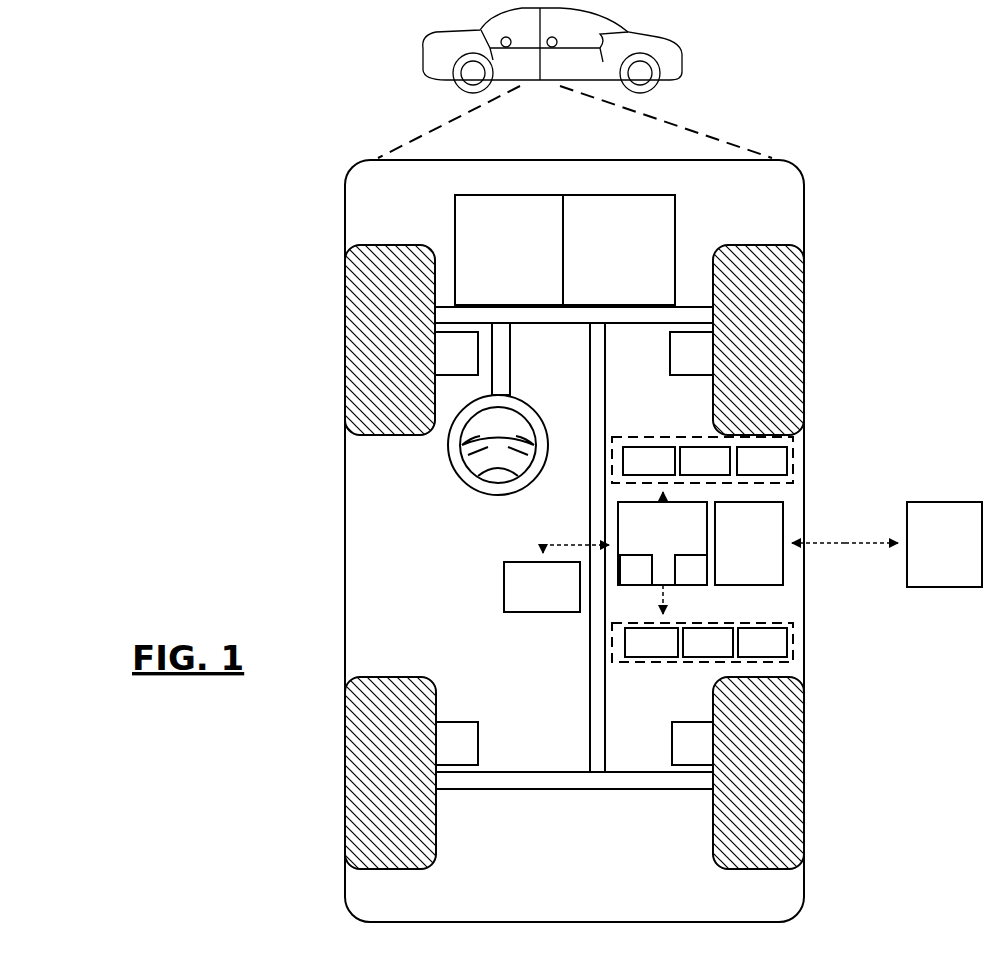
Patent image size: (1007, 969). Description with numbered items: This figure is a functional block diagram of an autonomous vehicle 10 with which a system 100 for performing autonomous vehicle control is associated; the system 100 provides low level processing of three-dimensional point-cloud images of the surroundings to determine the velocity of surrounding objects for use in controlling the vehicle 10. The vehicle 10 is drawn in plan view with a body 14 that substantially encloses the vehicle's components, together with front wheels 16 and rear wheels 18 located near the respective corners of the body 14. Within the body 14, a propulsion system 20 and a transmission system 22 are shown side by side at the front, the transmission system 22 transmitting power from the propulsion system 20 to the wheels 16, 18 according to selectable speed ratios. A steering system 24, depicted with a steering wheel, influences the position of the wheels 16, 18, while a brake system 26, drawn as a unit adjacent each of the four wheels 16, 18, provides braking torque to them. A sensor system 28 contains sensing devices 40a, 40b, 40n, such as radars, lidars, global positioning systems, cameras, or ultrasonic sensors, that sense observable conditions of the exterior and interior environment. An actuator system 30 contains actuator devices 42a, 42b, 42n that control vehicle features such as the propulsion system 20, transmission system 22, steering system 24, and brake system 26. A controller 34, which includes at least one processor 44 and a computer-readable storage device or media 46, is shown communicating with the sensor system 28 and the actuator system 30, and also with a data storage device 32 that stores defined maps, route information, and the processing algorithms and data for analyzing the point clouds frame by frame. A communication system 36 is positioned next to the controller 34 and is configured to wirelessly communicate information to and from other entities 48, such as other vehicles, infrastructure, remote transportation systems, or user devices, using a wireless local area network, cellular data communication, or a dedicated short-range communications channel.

The vehicle 10 is at (424, 58).
The system for performing an autonomous vehicle control 100 is at (830, 167).
The body 14 is at (345, 526).
The front wheels 16 is at (392, 245).
The rear wheels 18 is at (408, 869).
The propulsion system 20 is at (509, 250).
The transmission system 22 is at (619, 250).
The steering system 24 is at (534, 352).
The brake system 26 is at (574, 548).
The sensor system 28 is at (655, 413).
The actuator system 30 is at (660, 663).
The data storage device 32 is at (542, 587).
The controller 34 is at (662, 543).
The communication system 36 is at (749, 543).
The sensing device 40a is at (649, 461).
The sensing device 40b is at (705, 461).
The sensing device 40n is at (762, 461).
The actuator device 42a is at (651, 642).
The actuator device 42b is at (708, 642).
The actuator device 42n is at (762, 642).
The processor 44 is at (636, 570).
The computer-readable storage device or media 46 is at (691, 570).
The other entities 48 is at (944, 544).